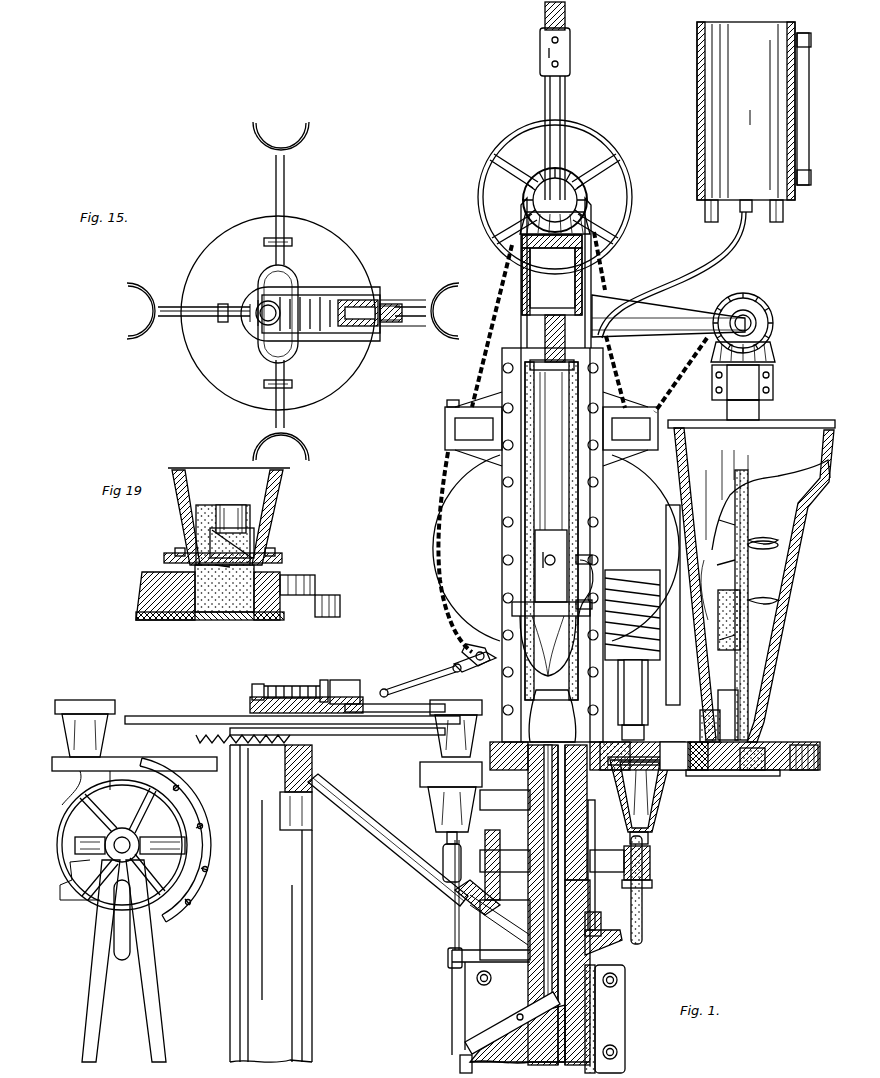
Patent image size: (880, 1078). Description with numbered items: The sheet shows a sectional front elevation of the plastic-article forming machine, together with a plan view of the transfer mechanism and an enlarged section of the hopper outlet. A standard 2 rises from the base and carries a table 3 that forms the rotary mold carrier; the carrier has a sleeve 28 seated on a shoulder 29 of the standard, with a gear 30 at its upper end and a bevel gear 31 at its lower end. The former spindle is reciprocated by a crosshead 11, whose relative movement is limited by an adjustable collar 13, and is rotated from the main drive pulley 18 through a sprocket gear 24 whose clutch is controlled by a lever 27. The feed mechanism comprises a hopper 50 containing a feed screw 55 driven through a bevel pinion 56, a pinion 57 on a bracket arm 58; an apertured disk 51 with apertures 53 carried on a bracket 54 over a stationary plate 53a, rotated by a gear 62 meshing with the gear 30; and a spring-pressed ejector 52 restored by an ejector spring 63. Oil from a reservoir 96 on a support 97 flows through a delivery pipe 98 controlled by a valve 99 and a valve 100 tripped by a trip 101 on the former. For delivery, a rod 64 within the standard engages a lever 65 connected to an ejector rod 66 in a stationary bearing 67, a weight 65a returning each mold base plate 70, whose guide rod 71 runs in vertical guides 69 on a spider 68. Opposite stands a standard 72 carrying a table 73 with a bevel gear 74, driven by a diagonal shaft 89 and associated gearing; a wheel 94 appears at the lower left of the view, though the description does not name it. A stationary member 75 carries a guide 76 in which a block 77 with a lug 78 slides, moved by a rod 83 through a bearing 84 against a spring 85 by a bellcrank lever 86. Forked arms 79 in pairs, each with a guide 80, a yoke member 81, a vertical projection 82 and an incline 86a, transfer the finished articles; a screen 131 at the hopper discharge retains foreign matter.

In FIG. 1, the standard 2 is at (590, 887).
In FIG. 1, the table 3 is at (420, 780).
In FIG. 1, the crosshead 11 is at (445, 418).
In FIG. 1, the adjustable collar 13 is at (570, 52).
In FIG. 1, the main drive pulley 18 is at (520, 138).
In FIG. 1, the sprocket gear 24 is at (438, 585).
In FIG. 1, the lever 27 is at (466, 648).
In FIG. 1, the sleeve 28 is at (610, 841).
In FIG. 1, the shoulder 29 is at (600, 918).
In FIG. 1, the gear 30 is at (440, 751).
In FIG. 1, the bevel gear 31 is at (612, 942).
In FIG. 1, the hopper 50 is at (780, 440).
In FIG. 1, the apertured disk 51 is at (716, 772).
In FIG. 1, the spring-pressed ejector 52 is at (758, 690).
In FIG. 1, the apertures 53 is at (780, 772).
In FIG. 1, the stationary plate 53a is at (745, 772).
In FIG. 1, the bracket 54 is at (730, 718).
In FIG. 1, the feed screw 55 is at (750, 535).
In FIG. 1, the bevel pinion 56 is at (772, 350).
In FIG. 1, the pinion 57 is at (770, 304).
In FIG. 1, the bracket arm 58 is at (680, 305).
In FIG. 1, the gear 62 is at (800, 750).
In FIG. 1, the ejector spring 63 is at (685, 612).
In FIG. 1, the rod 64 is at (597, 985).
In FIG. 1, the lever 65 is at (505, 1022).
In FIG. 1, the weight 65a is at (456, 1066).
In FIG. 1, the ejector rod 66 is at (452, 988).
In FIG. 1, the stationary bearing 67 is at (448, 956).
In FIG. 1, the spider 68 is at (612, 861).
In FIG. 1, the vertical guides 69 is at (615, 877).
In FIG. 1, the base plate 70 is at (665, 820).
In FIG. 1, the guide rod 71 is at (644, 903).
In FIG. 1, the standard 72 is at (312, 940).
In FIG. 15, the table 73 is at (204, 364).
In FIG. 1, the table 73 is at (340, 740).
In FIG. 1, the bevel gear 74 is at (212, 745).
In FIG. 1, the stationary member 75 is at (256, 698).
In FIG. 1, the guide 76 is at (395, 705).
In FIG. 1, the block 77 is at (338, 680).
In FIG. 1, the lug 78 is at (445, 724).
In FIG. 15, the forked arms 79 is at (417, 303).
In FIG. 15, the guide 80 is at (283, 240).
In FIG. 15, the yoke member 81 is at (298, 280).
In FIG. 15, the vertical projection 82 is at (278, 205).
In FIG. 1, the vertical projection 82 is at (380, 710).
In FIG. 1, the rod 83 is at (258, 684).
In FIG. 1, the bearing 84 is at (324, 680).
In FIG. 1, the spring 85 is at (290, 684).
In FIG. 1, the bellcrank lever 86 is at (455, 662).
In FIG. 1, the incline 86a is at (400, 686).
In FIG. 1, the shaft 89 is at (412, 878).
In FIG. 1, the wheel 94 is at (165, 925).
In FIG. 1, the oil reservoir 96 is at (716, 100).
In FIG. 1, the support 97 is at (705, 210).
In FIG. 1, the delivery pipe 98 is at (690, 273).
In FIG. 1, the valve 99 is at (600, 580).
In FIG. 1, the valve 100 is at (592, 545).
In FIG. 1, the trip 101 is at (575, 520).
In FIG. 19, the screen 131 is at (228, 568).